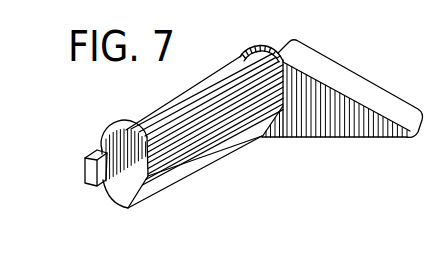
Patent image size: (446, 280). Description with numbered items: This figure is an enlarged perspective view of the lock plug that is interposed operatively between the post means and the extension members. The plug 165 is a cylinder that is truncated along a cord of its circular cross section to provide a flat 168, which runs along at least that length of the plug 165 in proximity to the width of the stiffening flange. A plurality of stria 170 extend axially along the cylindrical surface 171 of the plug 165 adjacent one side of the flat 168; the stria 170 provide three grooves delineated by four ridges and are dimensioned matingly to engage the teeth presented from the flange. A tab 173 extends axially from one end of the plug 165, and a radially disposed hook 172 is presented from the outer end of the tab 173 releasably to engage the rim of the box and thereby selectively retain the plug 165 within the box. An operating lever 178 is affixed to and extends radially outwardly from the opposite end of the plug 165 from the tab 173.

The plug 165 is at (124, 192).
The flat 168 is at (200, 158).
The stria 170 is at (178, 163).
The cylindrical surface 171 is at (218, 83).
The hook 172 is at (88, 155).
The tab 173 is at (100, 180).
The operating lever 178 is at (365, 97).